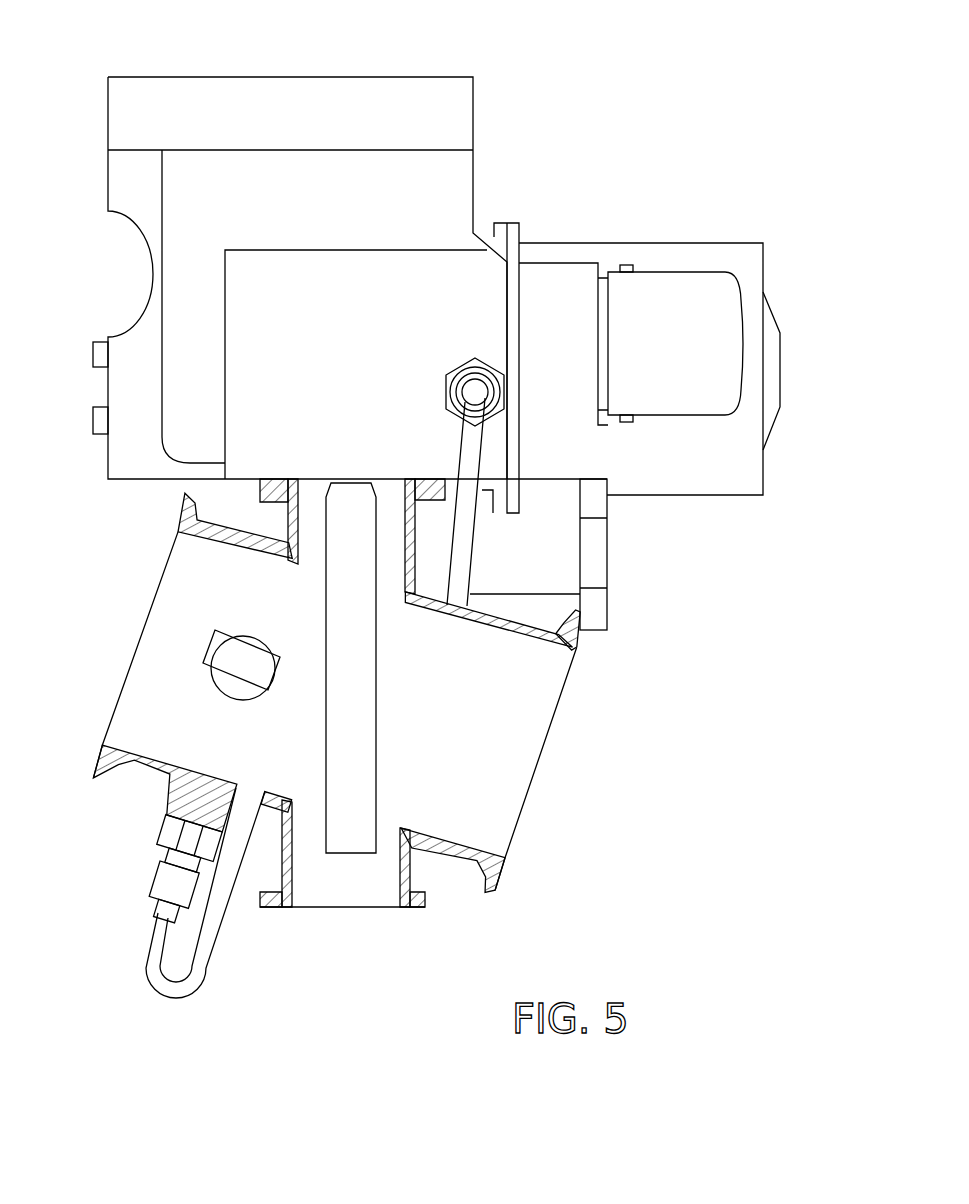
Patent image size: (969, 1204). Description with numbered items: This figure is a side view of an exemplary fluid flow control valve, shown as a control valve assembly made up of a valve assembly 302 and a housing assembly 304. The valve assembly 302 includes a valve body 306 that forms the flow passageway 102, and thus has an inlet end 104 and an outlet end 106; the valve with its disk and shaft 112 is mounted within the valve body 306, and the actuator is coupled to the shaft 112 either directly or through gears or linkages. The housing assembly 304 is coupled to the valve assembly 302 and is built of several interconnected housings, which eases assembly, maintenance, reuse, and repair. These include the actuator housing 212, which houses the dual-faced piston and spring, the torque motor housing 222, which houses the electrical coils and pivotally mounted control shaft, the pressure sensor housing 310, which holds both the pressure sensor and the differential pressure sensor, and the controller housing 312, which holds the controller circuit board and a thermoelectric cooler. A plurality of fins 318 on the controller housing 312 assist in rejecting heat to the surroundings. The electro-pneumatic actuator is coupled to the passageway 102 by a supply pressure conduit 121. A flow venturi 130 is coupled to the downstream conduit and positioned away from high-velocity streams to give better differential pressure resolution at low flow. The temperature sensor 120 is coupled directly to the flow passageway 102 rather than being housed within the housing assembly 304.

The flow passageway 102 is at (575, 628).
The inlet end 104 is at (540, 760).
The outlet end 106 is at (157, 580).
The shaft 112 is at (360, 745).
The temperature sensor 120 is at (167, 790).
The supply pressure conduit 121 is at (463, 566).
The flow venturi 130 is at (240, 640).
The actuator housing 212 is at (738, 470).
The torque motor housing 222 is at (693, 363).
The valve assembly 302 is at (708, 690).
The housing assembly 304 is at (460, 319).
The valve body 306 is at (572, 877).
The pressure sensor housing 310 is at (598, 580).
The controller housing 312 is at (349, 212).
The fins 318 is at (458, 85).